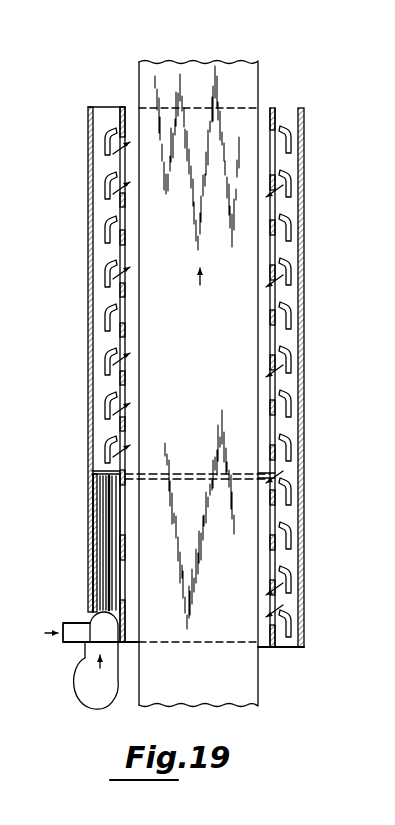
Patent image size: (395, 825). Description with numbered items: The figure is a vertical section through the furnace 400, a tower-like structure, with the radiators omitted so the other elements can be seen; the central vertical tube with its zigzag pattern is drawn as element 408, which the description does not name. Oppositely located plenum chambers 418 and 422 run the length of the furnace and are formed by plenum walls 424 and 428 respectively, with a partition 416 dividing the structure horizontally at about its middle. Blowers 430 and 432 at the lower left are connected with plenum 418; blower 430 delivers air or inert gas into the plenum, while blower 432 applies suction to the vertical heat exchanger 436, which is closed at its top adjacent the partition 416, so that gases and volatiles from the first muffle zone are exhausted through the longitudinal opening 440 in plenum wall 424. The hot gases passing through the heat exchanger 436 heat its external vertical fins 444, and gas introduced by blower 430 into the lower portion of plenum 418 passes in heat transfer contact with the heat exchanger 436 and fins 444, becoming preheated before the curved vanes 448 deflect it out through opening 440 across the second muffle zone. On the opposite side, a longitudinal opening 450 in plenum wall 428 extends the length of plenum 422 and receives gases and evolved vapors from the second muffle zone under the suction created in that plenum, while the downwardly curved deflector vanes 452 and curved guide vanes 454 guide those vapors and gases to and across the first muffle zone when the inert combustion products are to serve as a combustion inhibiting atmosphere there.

The furnace 400 is at (84, 256).
The central tube 408 is at (207, 63).
The partition 416 is at (163, 478).
The plenum chamber 418 is at (90, 440).
The plenum chamber 422 is at (305, 124).
The plenum wall 424 is at (124, 386).
The plenum wall 428 is at (262, 555).
The blower 430 is at (80, 686).
The blower 432 is at (78, 622).
The vertical heat exchanger 436 is at (124, 574).
The longitudinal opening 440 is at (124, 244).
The external vertical fins 444 is at (99, 533).
The curved vanes 448 is at (104, 182).
The longitudinal opening 450 is at (274, 124).
The downwardly curved deflector vanes 452 is at (292, 197).
The curved guide vanes 454 is at (285, 568).